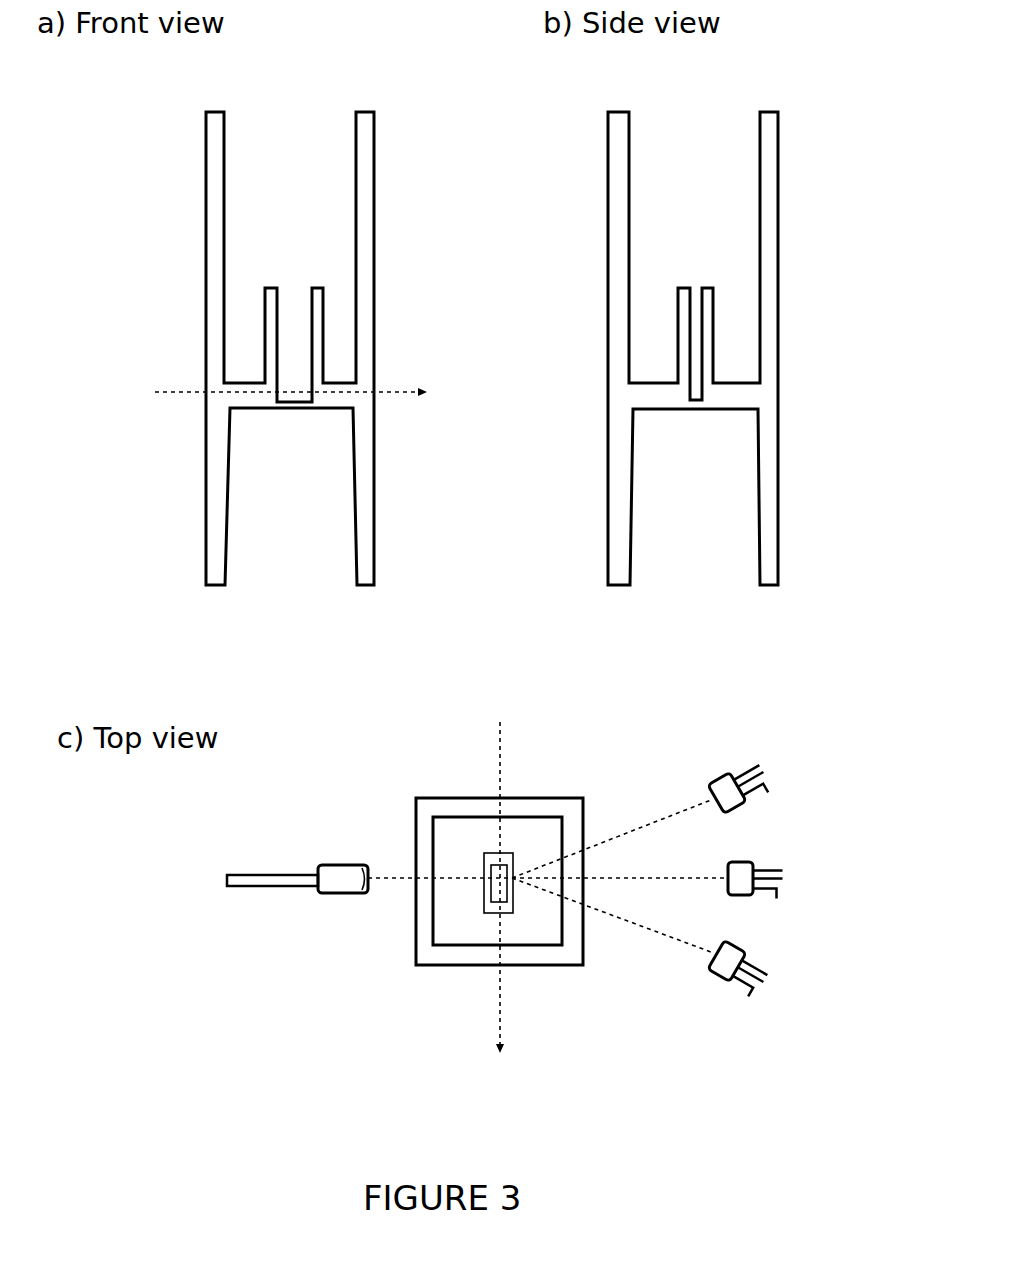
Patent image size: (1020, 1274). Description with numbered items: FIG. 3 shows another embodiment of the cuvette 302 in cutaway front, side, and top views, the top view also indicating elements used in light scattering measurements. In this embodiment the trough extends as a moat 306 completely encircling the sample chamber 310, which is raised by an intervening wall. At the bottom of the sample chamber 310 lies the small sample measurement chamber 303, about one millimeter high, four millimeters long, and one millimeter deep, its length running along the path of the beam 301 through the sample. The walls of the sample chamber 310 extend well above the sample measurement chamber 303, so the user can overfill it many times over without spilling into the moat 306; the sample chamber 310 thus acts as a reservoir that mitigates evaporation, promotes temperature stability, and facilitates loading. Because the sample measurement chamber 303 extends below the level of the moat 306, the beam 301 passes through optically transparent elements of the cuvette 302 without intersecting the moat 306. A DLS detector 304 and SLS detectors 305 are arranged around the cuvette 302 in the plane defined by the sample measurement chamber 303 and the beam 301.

The beam 301 is at (187, 397).
The cuvette 302 is at (210, 185).
The sample measurement chamber 303 is at (288, 393).
The DLS detector 304 is at (345, 901).
The SLS detector 305 is at (370, 132).
The moat 306 is at (235, 335).
The sample chamber 310 is at (297, 330).